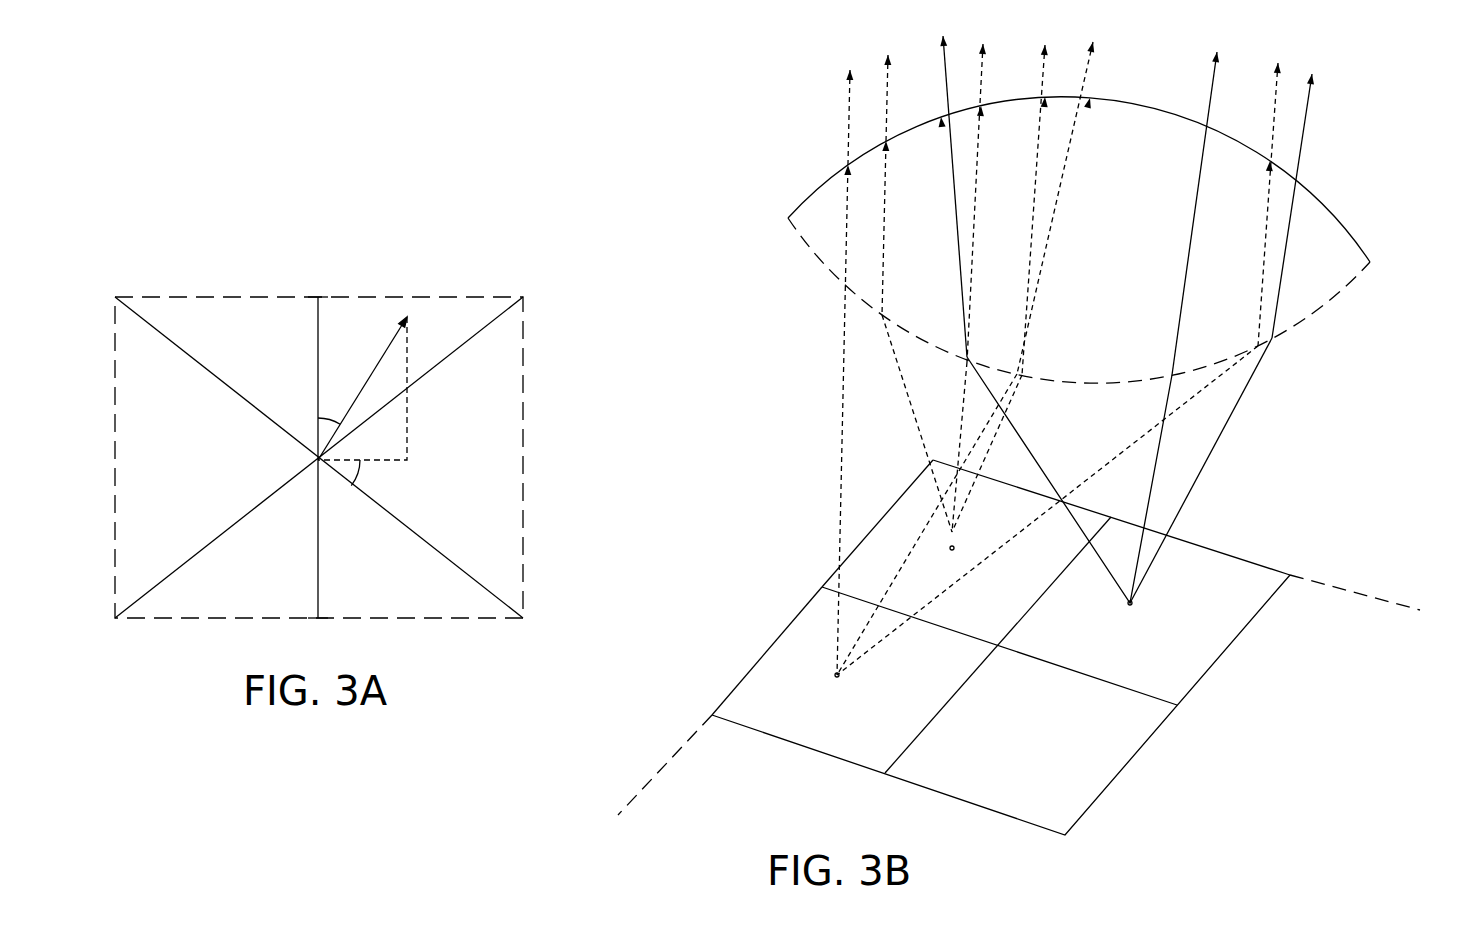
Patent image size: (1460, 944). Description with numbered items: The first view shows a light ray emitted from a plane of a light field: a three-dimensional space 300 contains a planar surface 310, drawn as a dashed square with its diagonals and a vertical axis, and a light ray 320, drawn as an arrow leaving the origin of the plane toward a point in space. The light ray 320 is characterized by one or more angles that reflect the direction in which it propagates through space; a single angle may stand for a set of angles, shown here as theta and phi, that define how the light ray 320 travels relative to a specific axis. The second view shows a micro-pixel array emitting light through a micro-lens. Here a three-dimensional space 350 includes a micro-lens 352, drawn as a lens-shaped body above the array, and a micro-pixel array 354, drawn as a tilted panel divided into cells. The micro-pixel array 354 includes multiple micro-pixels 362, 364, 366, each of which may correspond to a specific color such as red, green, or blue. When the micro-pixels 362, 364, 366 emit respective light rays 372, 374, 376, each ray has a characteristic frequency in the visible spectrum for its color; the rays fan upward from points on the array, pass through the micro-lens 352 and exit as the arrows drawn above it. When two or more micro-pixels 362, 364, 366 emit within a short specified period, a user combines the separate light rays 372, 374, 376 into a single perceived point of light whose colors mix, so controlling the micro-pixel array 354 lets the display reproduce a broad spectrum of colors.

In FIG. 3A, the three-dimensional space 300 is at (470, 202).
In FIG. 3A, the planar surface 310 is at (440, 297).
In FIG. 3A, the light ray 320 is at (392, 338).
In FIG. 3B, the three-dimensional space 350 is at (765, 195).
In FIG. 3B, the micro-lens 352 is at (1323, 213).
In FIG. 3B, the micro-pixel array 354 is at (1067, 838).
In FIG. 3B, the micro-pixel 362 is at (1213, 548).
In FIG. 3B, the micro-pixel 364 is at (887, 512).
In FIG. 3B, the micro-pixel 366 is at (767, 646).
In FIG. 3B, the light ray 372 is at (1133, 605).
In FIG. 3B, the light ray 374 is at (955, 548).
In FIG. 3B, the light ray 376 is at (840, 677).